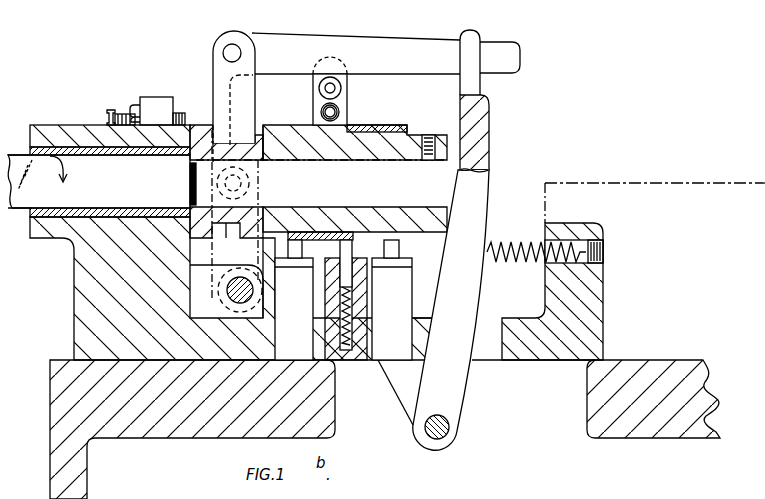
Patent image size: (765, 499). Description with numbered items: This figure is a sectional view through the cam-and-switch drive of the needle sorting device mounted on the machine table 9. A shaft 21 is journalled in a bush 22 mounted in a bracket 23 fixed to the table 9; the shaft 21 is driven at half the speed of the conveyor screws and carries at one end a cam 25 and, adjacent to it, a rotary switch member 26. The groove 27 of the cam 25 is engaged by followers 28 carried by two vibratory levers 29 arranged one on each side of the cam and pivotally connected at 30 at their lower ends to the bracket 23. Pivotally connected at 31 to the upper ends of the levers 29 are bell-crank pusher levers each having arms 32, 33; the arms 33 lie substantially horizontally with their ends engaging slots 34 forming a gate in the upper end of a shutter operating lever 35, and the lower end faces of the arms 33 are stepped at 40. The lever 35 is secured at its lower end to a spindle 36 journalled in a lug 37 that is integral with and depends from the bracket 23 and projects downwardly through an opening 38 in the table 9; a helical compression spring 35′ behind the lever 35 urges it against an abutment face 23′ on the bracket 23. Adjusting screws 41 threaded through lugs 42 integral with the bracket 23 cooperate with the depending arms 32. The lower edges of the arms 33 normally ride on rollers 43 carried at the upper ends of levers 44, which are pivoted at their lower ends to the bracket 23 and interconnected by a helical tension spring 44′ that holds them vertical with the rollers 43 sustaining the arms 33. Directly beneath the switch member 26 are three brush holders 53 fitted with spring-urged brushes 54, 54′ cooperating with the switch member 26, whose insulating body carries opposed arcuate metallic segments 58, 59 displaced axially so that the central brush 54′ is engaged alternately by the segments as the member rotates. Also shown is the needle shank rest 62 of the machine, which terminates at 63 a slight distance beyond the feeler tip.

The machine table 9 is at (165, 385).
The shaft 21 is at (102, 181).
The bush 22 is at (38, 182).
The bracket 23 is at (237, 288).
The abutment face 23′ is at (432, 347).
The cam 25 is at (272, 125).
The rotary switch member 26 is at (321, 178).
The groove 27 is at (230, 241).
The followers 28 is at (249, 183).
The vibratory levers 29 is at (252, 55).
The pivotal connection 30 is at (233, 303).
The pivotal connection 31 is at (234, 48).
The arm 32 is at (215, 95).
The arm 33 is at (342, 42).
The slots 34 is at (480, 80).
The shutter operating lever 35 is at (482, 193).
The helical compression spring 35′ is at (533, 265).
The spindle 36 is at (440, 435).
The lug 37 is at (400, 386).
The opening 38 is at (586, 408).
The step 40 is at (505, 66).
The adjusting screws 41 is at (124, 112).
The lugs 42 is at (152, 100).
The rollers 43 is at (347, 88).
The levers 44 is at (347, 113).
The helical tension spring 44′ is at (321, 113).
The brush holders 53 is at (350, 380).
The brush 54 is at (296, 248).
The central brush 54′ is at (340, 248).
The arcuate metallic segment 58 is at (385, 128).
The arcuate metallic segment 59 is at (345, 237).
The needle shank rest 62 is at (636, 182).
The termination of the rest 63 is at (548, 200).